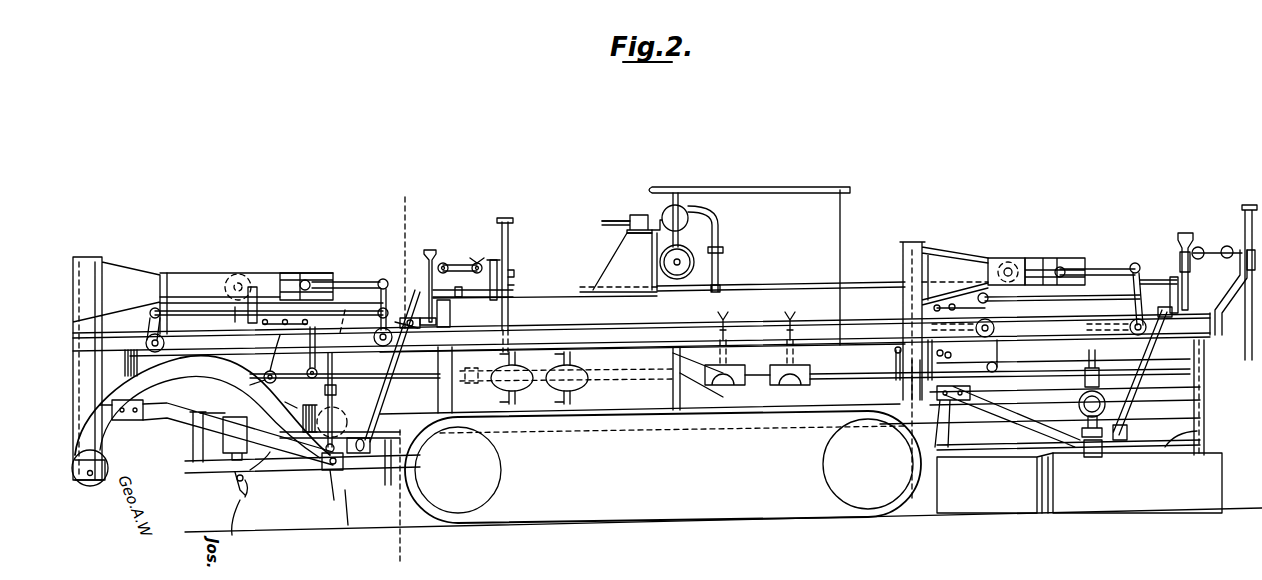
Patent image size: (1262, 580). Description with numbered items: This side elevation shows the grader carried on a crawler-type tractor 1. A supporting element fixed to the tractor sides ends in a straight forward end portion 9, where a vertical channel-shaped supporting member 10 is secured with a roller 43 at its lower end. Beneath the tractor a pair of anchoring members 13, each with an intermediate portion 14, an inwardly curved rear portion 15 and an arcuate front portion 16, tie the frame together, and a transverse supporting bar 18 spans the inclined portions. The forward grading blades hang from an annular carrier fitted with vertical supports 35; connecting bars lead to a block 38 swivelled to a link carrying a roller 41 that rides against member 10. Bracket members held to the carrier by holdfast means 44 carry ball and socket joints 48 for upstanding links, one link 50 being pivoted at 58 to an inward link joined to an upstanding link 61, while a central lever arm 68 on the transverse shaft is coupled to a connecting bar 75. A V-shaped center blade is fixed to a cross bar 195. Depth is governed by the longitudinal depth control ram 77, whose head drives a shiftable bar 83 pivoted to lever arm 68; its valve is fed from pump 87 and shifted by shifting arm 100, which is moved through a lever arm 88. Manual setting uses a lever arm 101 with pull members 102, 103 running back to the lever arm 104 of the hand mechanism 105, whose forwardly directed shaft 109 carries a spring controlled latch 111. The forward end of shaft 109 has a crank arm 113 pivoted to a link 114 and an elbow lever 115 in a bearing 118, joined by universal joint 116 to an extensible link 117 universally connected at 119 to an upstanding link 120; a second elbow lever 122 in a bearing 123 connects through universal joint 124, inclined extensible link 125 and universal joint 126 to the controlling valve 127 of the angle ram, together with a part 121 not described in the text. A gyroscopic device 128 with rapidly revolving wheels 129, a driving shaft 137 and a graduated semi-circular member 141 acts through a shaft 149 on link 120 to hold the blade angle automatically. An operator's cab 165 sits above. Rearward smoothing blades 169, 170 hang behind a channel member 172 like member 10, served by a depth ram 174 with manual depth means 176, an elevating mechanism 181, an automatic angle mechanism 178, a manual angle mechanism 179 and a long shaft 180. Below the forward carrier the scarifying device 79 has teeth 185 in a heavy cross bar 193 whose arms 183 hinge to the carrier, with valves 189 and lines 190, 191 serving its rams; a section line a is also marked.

The tractor 1 is at (640, 400).
The straight forward end portion 9 is at (410, 210).
The supporting member 10 is at (98, 274).
The anchoring members 13 is at (384, 472).
The intermediate portion 14 is at (865, 403).
The inwardly curved rear portion 15 is at (1033, 408).
The arcuate front portion 16 is at (190, 368).
The transverse supporting bar 18 is at (299, 417).
The vertical supports 35 is at (193, 432).
The block 38 is at (141, 421).
The roller 41 is at (113, 420).
The roller 43 is at (108, 466).
The holdfast means 44 is at (336, 494).
The ball and socket joint connections 48 is at (322, 468).
The upstanding link 50 is at (278, 427).
The pivot connection 58 is at (326, 390).
The upstanding link 61 is at (345, 310).
The lever arm 68 is at (385, 282).
The connecting bar 75 is at (193, 310).
The depth control ram 77 is at (187, 273).
The scarifying device 79 is at (232, 480).
The shiftable bar 83 is at (350, 285).
The pump 87 is at (525, 392).
The lever arm 88 is at (268, 372).
The shifting arm 100 is at (215, 310).
The lever arm 101 is at (291, 320).
The pull member 102 is at (216, 398).
The pull member 103 is at (275, 390).
The lever arm 104 is at (729, 321).
The mechanism 105 is at (733, 372).
The shaft 109 is at (672, 356).
The spring controlled latch 111 is at (1197, 431).
The crank arm 113 is at (512, 288).
The link 114 is at (514, 274).
The elbow shaped lever 115 is at (509, 250).
The universal joint connection 116 is at (476, 262).
The link 117 is at (450, 264).
The bearing 118 is at (493, 260).
The universal joint 119 is at (443, 262).
The upstanding link 120 is at (428, 250).
The link 121 is at (410, 316).
The elbow shaped lever 122 is at (447, 298).
The bearing 123 is at (445, 315).
The universal joint connection 124 is at (420, 333).
The link 125 is at (398, 380).
The universal joint 126 is at (388, 510).
The controlling valve 127 is at (397, 435).
The gyroscopic device 128 is at (666, 206).
The rapidly revolving wheels 129 is at (658, 260).
The shaft 137 is at (608, 220).
The semi-circular member 141 is at (720, 226).
The shaft 149 is at (772, 286).
The cab 165 is at (745, 190).
The smoothing blade 169 is at (1000, 500).
The smoothing blade 170 is at (1138, 500).
The channel shaped member 172 is at (905, 258).
The ram 174 is at (1000, 258).
The manually operated means 176 is at (892, 372).
The mechanism 178 is at (1187, 233).
The mechanism 179 is at (1248, 318).
The shaft 180 is at (1038, 363).
The mechanism 181 is at (1098, 268).
The arms 183 is at (580, 392).
The teeth 185 is at (223, 440).
The controlling valves 189 is at (240, 432).
The pressure conducting line 190 is at (279, 402).
The pressure conducting line 191 is at (262, 475).
The cross bar 193 is at (234, 512).
The cross bar 195 is at (345, 525).
The section line a is at (388, 571).